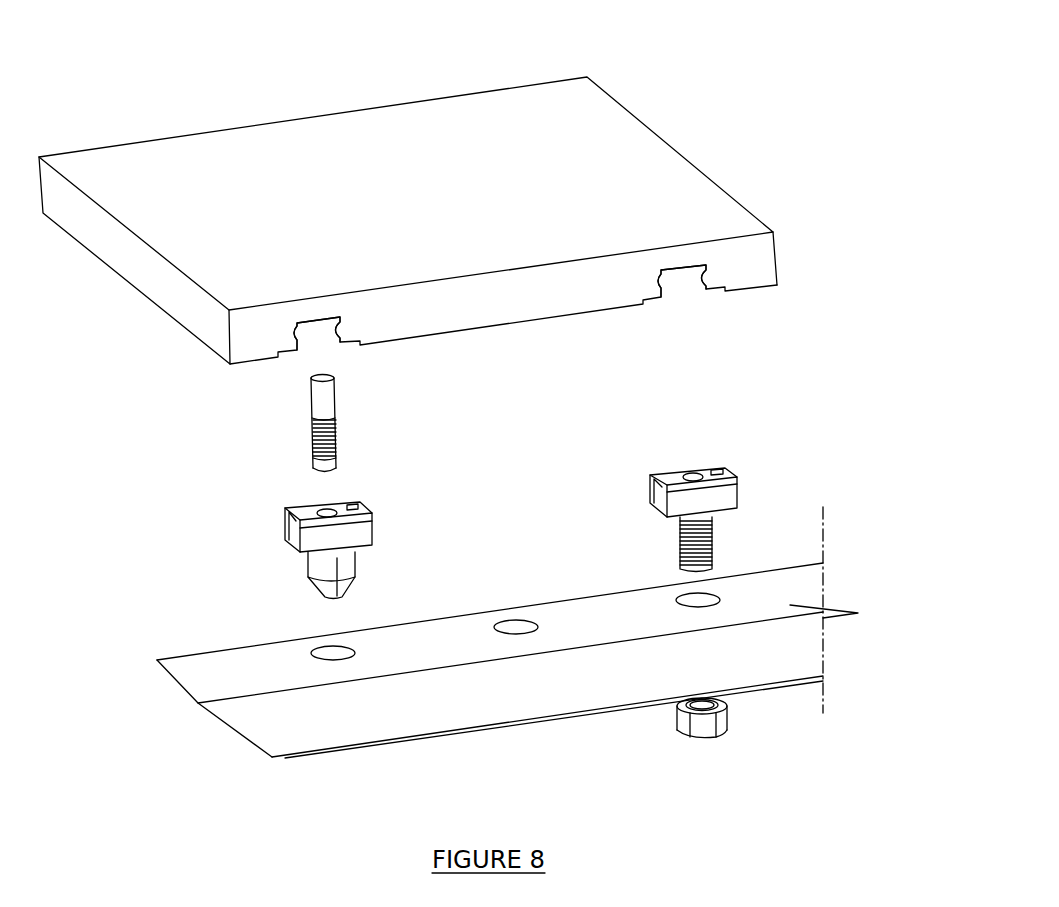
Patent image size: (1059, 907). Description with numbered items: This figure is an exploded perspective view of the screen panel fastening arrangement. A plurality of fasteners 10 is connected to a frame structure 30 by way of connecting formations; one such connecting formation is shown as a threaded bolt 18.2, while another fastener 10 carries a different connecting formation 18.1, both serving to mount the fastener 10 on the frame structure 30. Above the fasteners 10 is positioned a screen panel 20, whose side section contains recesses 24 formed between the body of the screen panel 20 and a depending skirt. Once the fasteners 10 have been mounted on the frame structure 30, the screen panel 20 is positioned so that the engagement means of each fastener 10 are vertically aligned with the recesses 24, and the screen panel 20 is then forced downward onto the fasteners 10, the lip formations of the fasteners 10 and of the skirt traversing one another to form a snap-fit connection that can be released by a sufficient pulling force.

The screen panel 20 is at (656, 70).
The recess 24 is at (306, 363).
The fastener 10 is at (382, 496).
The snap stud of clip 18.1 is at (313, 585).
The threaded bolt 18.2 is at (678, 542).
The frame structure 30 is at (418, 713).